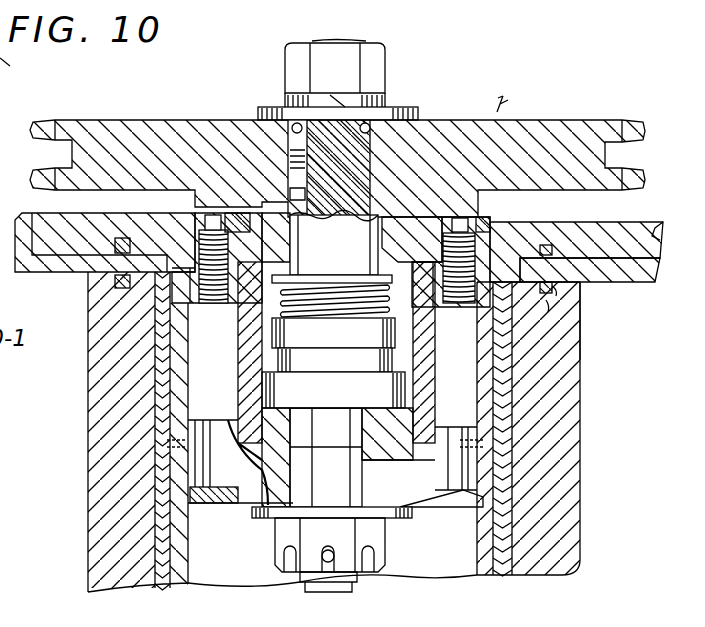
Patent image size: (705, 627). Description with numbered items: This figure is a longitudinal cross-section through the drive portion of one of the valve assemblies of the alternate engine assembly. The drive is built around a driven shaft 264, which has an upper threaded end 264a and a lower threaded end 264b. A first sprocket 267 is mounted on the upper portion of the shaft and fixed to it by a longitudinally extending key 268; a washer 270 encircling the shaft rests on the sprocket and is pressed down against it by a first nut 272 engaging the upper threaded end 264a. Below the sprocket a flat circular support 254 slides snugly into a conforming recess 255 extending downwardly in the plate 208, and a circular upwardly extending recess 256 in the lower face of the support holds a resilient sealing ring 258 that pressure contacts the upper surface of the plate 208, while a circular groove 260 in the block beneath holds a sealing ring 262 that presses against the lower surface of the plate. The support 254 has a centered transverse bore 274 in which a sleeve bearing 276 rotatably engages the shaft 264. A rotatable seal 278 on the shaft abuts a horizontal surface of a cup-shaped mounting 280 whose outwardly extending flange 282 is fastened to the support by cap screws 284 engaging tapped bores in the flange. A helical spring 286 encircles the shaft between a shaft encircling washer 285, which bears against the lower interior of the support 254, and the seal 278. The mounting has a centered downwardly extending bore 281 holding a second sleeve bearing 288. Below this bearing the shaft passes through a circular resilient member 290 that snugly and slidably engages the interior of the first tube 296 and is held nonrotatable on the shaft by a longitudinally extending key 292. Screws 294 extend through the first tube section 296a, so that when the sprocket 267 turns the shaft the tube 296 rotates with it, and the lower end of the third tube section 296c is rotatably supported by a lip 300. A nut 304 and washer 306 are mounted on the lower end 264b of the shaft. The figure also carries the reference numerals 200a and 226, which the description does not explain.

The upper threaded end 264a is at (338, 40).
The first nut 272 is at (385, 65).
The washer 270 is at (405, 112).
The first sprocket 267 is at (548, 122).
The longitudinally extending key 268 is at (295, 142).
The centered transverse bore 274 is at (413, 210).
The cap screws 284 is at (195, 210).
The shaft encircling washer 285 is at (266, 250).
The resilient sealing ring 258 is at (546, 244).
The flat circular support 254 is at (633, 222).
The circular upwardly extending recess 256 is at (566, 246).
The conforming recess 255 is at (652, 243).
The plate 208 is at (20, 268).
The circular groove 260 is at (555, 283).
The sealing ring 262 is at (548, 310).
The housing 200a is at (580, 362).
The first tube 296 is at (180, 380).
The first tube section 296a is at (507, 383).
The helical spring 286 is at (248, 308).
The outwardly extending flange 282 is at (440, 303).
The driven shaft 264 is at (352, 247).
The sleeve bearing 276 is at (354, 274).
The rotatable seal 278 is at (348, 345).
The cup-shaped mounting 280 is at (428, 382).
The centered downwardly extending bore 281 is at (383, 428).
The second sleeve bearing 288 is at (300, 412).
The longitudinally extending key 292 is at (250, 478).
The circular resilient member 290 is at (272, 480).
The screws 294 is at (187, 453).
The washer 306 is at (402, 512).
The nut 304 is at (388, 542).
The lower threaded end 264b is at (354, 583).
The base 226 is at (244, 604).
The third tube section 296c is at (347, 601).
The lip 300 is at (420, 601).